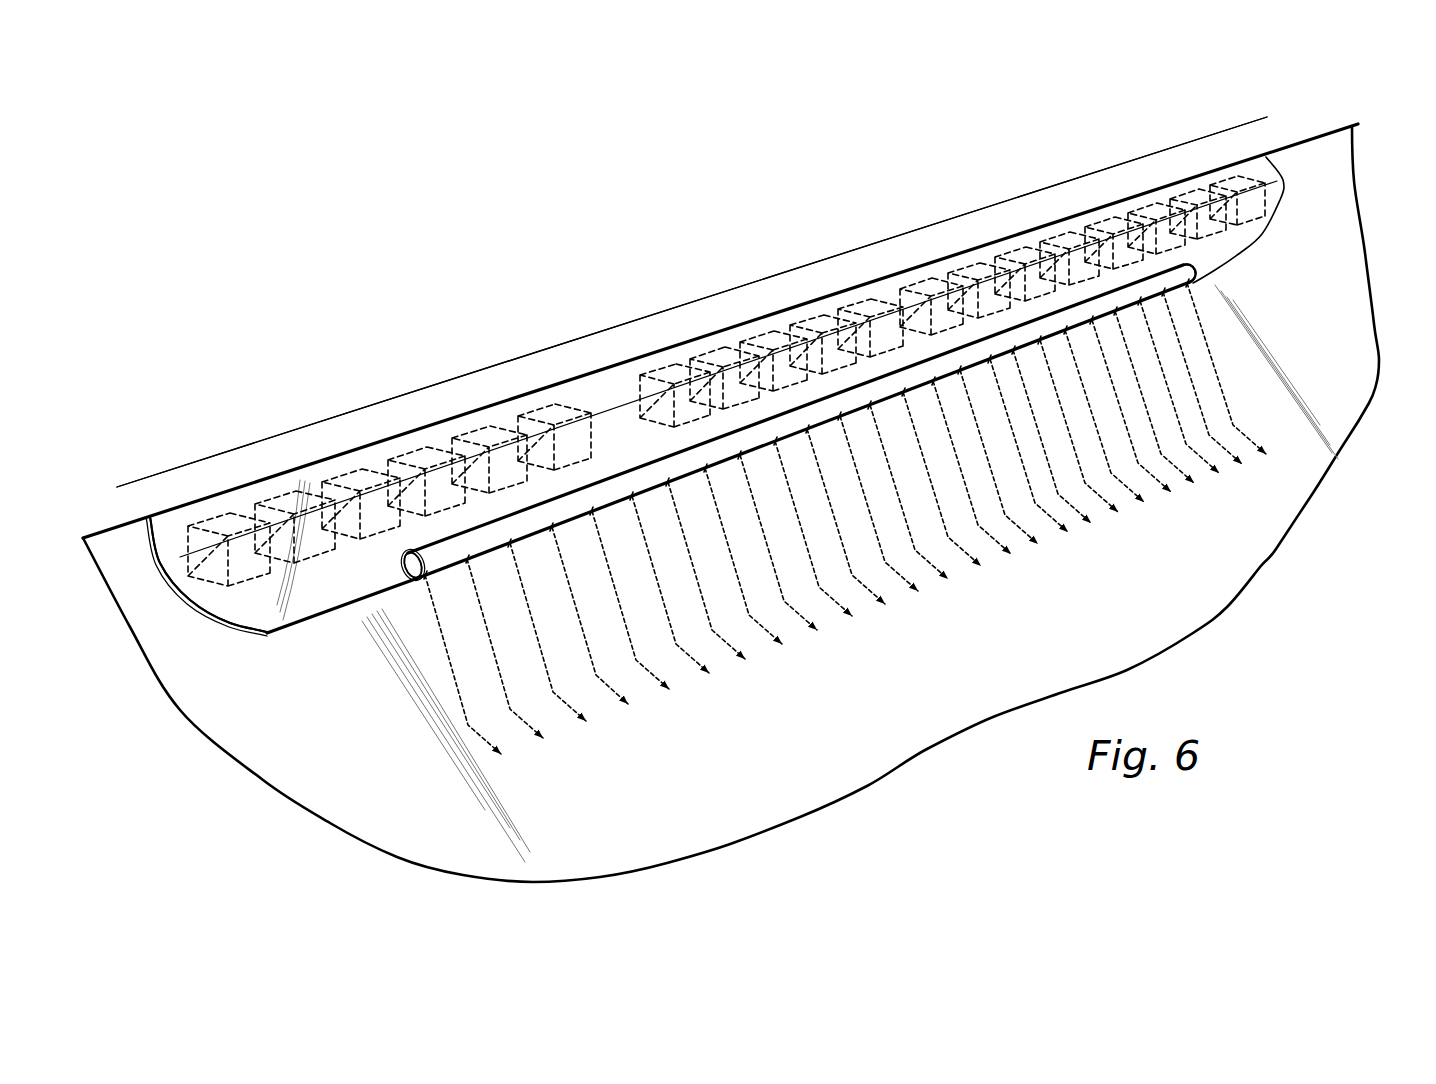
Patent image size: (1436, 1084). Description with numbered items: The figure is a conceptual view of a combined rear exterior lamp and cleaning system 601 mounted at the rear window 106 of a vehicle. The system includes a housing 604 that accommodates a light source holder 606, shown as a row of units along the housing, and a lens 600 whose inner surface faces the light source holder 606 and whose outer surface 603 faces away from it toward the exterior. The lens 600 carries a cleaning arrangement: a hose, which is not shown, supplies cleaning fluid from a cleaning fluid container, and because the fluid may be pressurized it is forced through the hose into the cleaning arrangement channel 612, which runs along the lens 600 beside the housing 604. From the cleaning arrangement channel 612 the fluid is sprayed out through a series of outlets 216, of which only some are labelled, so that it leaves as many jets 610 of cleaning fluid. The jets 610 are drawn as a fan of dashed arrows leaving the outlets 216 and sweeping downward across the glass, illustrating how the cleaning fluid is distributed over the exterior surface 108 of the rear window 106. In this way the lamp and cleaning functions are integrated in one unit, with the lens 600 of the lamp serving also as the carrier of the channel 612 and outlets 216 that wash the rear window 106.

The rear window 106 is at (1252, 531).
The exterior surface 108 is at (1215, 568).
The outlets 216 is at (418, 583).
The lens 600 is at (268, 595).
The combined rear exterior lamp and cleaning system 601 is at (278, 443).
The outer surface 603 is at (880, 350).
The housing 604 is at (221, 492).
The light source holder 606 is at (398, 451).
The jets of cleaning fluid 610 is at (697, 653).
The cleaning arrangement channel 612 is at (440, 555).